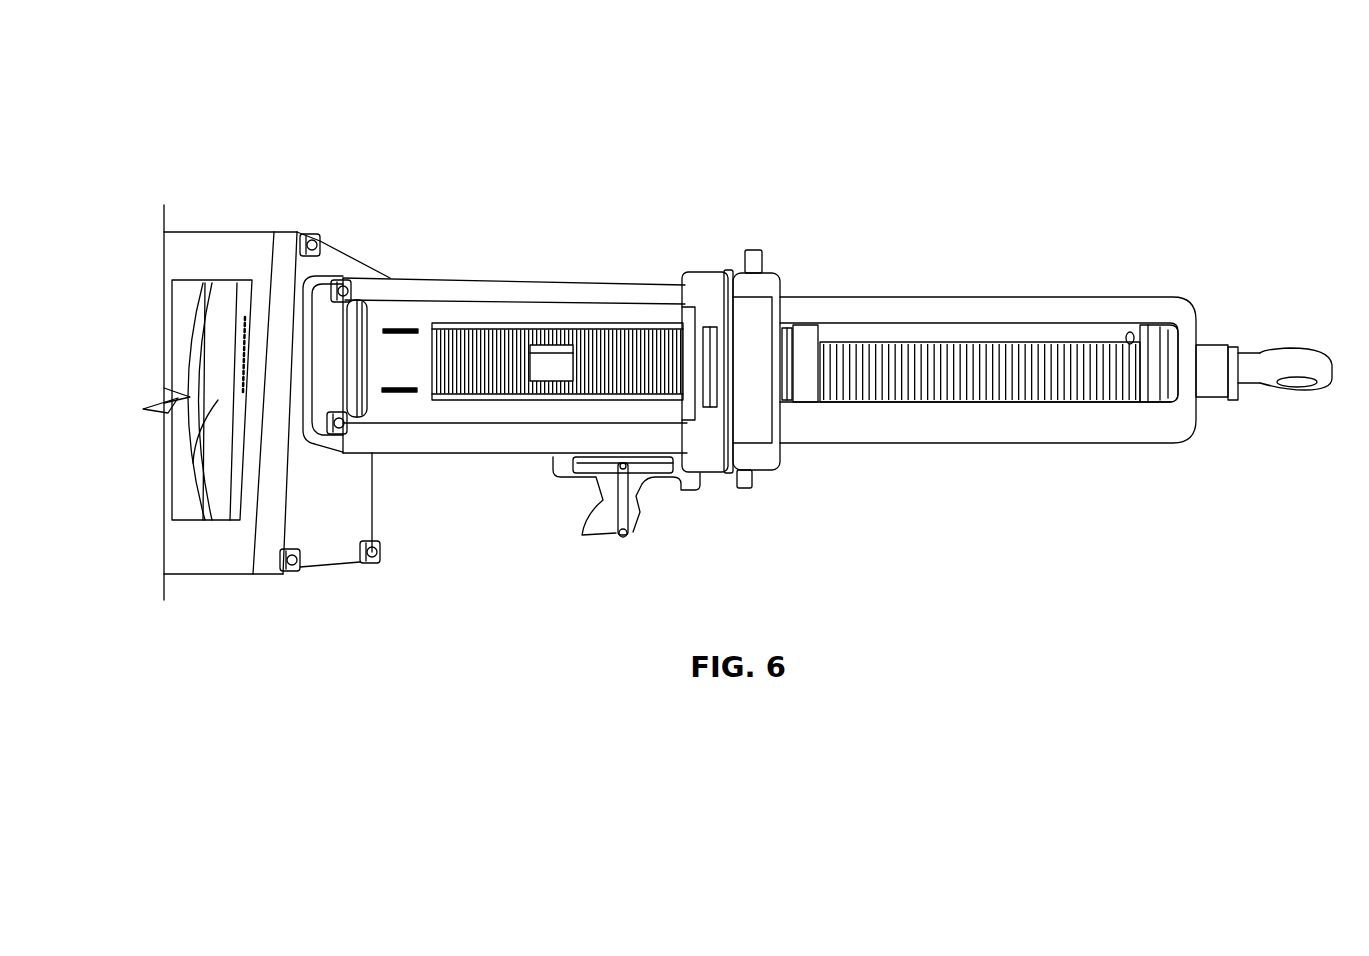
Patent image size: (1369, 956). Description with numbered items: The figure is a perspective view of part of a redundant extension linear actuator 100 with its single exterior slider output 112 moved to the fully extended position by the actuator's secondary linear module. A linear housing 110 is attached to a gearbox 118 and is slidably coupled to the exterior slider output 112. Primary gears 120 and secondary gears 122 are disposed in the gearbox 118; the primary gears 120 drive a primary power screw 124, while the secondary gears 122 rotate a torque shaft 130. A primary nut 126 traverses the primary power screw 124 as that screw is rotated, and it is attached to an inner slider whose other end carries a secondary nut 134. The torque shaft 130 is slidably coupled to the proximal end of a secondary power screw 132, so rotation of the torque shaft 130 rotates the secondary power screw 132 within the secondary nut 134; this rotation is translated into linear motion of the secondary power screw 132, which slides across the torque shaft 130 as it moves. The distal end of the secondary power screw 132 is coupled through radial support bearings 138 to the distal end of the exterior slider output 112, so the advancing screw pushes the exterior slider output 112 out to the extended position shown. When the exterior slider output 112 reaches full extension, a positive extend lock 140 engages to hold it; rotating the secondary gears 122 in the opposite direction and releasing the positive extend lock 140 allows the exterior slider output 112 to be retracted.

The actuator 100 is at (200, 97).
The linear housing 110 is at (457, 288).
The exterior slider output 112 is at (1027, 432).
The gearbox 118 is at (203, 242).
The primary gears 120 is at (203, 520).
The secondary gears 122 is at (197, 360).
The primary power screw 124 is at (498, 367).
The primary nut 126 is at (350, 380).
The torque shaft 130 is at (553, 363).
The secondary power screw 132 is at (998, 343).
The secondary nut 134 is at (807, 335).
The radial support bearings 138 is at (1163, 357).
The positive extend lock 140 is at (677, 478).